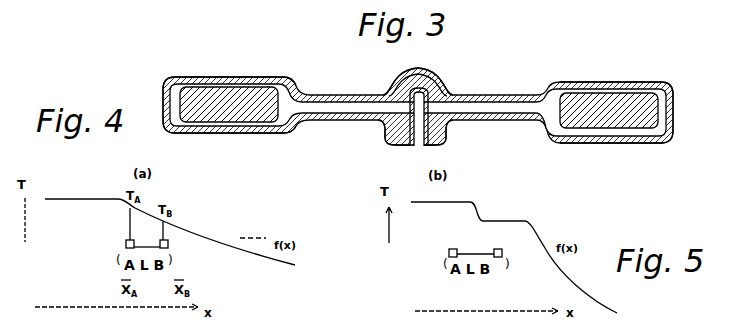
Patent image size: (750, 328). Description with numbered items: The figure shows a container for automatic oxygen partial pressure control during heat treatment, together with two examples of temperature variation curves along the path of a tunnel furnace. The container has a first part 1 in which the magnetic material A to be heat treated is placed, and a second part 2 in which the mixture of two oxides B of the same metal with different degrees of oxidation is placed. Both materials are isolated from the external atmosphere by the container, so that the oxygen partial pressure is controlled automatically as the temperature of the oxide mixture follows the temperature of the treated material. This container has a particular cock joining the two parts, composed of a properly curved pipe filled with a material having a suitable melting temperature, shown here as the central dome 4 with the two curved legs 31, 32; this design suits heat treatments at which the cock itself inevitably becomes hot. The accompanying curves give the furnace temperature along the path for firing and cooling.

The container part for magnetic material 1 is at (246, 134).
The container part for oxide mixture 2 is at (624, 144).
The first thermocouple leg 31 is at (385, 144).
The second thermocouple leg 32 is at (445, 144).
The junction dome 4 is at (450, 82).
The magnetic material to be heat treated A is at (213, 93).
The mixture of two oxides B is at (606, 102).